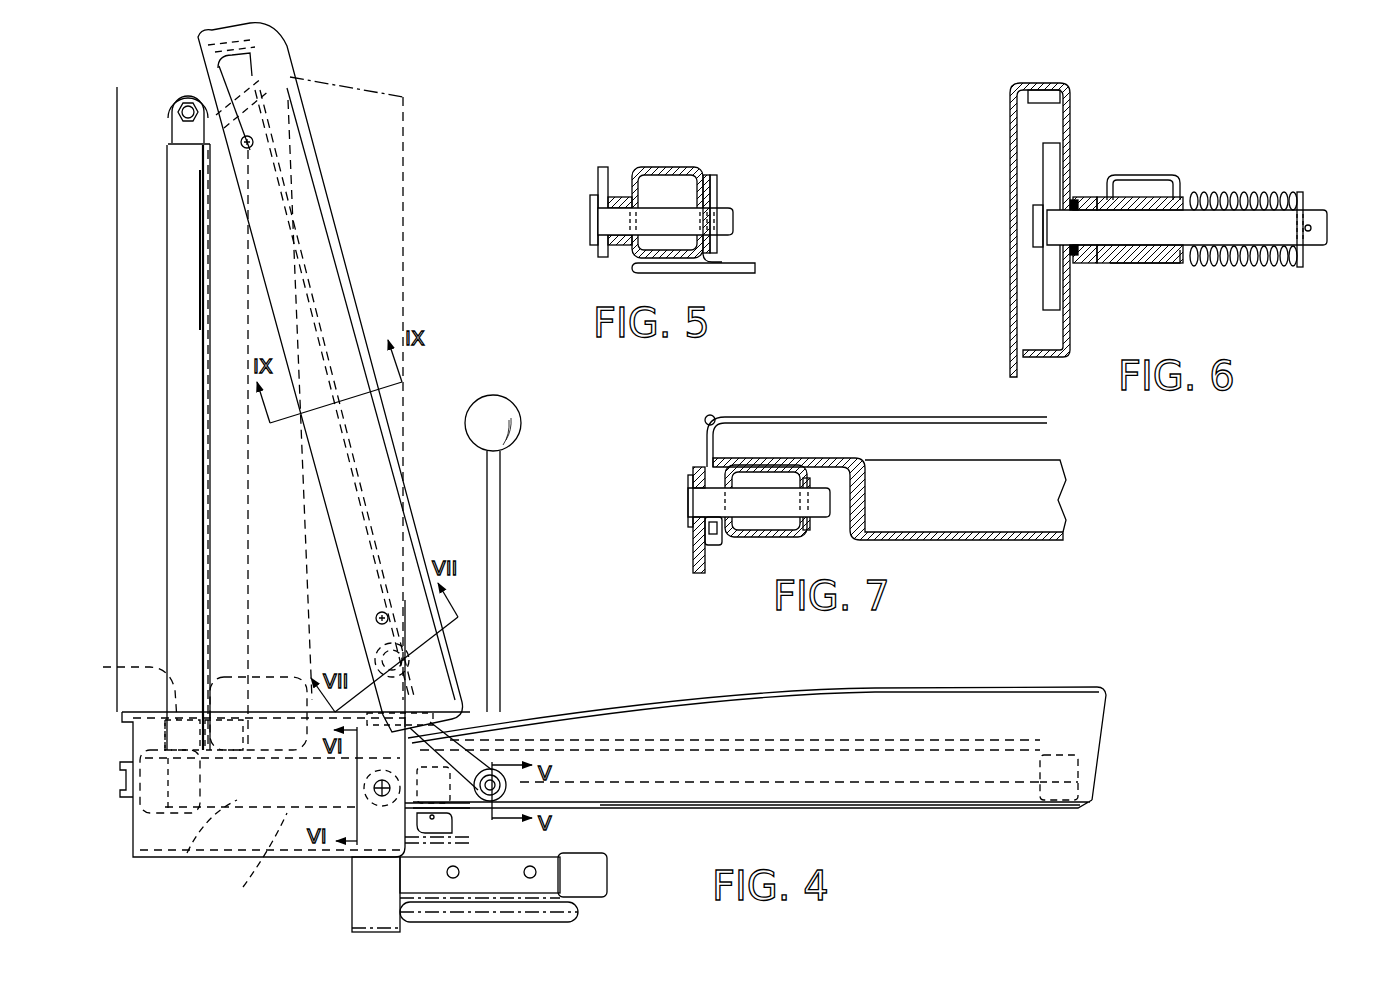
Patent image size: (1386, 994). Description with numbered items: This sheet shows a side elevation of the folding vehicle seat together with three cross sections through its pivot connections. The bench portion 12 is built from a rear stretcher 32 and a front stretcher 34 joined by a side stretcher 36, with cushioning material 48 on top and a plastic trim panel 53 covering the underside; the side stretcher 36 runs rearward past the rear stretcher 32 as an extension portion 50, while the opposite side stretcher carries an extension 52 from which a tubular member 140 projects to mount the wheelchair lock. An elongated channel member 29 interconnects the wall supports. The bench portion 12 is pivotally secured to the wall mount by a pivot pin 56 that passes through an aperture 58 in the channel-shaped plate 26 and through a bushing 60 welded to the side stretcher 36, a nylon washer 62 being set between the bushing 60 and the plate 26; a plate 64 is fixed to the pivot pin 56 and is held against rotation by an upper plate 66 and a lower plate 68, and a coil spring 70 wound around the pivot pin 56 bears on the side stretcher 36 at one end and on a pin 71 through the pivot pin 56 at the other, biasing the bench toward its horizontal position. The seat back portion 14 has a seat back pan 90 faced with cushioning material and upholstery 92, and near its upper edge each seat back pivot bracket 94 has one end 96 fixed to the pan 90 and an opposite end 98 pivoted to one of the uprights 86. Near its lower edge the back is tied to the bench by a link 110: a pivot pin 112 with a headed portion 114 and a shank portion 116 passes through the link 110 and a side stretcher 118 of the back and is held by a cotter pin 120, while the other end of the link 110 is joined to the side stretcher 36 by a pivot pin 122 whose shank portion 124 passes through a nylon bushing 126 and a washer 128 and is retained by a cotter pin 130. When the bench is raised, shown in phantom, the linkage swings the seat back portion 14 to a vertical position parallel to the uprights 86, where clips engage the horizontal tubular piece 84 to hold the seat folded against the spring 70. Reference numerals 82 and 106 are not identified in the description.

In FIG. 4, the bench portion 12 is at (628, 678).
In FIG. 4, the seat back portion 14 is at (376, 318).
In FIG. 4, the channel-shaped plate 26 is at (288, 820).
In FIG. 6, the channel-shaped plate 26 is at (1068, 148).
In FIG. 4, the channel member 29 is at (118, 757).
In FIG. 4, the rear stretcher 32 is at (492, 768).
In FIG. 4, the front stretcher 34 is at (1093, 780).
In FIG. 4, the side stretcher 36 is at (972, 792).
In FIG. 5, the side stretcher 36 is at (672, 167).
In FIG. 6, the side stretcher 36 is at (1135, 175).
In FIG. 4, the cushioning material 48 is at (973, 700).
In FIG. 4, the extension portion 50 is at (178, 858).
In FIG. 4, the extension 52 is at (352, 880).
In FIG. 4, the plastic trim panel 53 is at (875, 810).
In FIG. 4, the pivot pin 56 is at (362, 790).
In FIG. 6, the pivot pin 56 is at (1275, 218).
In FIG. 6, the aperture 58 is at (1077, 200).
In FIG. 6, the bushing 60 is at (1180, 200).
In FIG. 6, the nylon washer 62 is at (1083, 258).
In FIG. 6, the plate 64 is at (1050, 252).
In FIG. 6, the upper plate 66 is at (1043, 155).
In FIG. 6, the lower plate 68 is at (1043, 310).
In FIG. 6, the coil spring 70 is at (1232, 262).
In FIG. 6, the pin 71 is at (1312, 228).
In FIG. 4, the support column 82 is at (152, 390).
In FIG. 4, the horizontal tubular piece 84 is at (125, 667).
In FIG. 4, the uprights 86 is at (185, 483).
In FIG. 7, the seat back pan 90 is at (820, 460).
In FIG. 4, the cushioning material and upholstery 92 is at (330, 186).
In FIG. 4, the seat back pivot bracket 94 is at (217, 97).
In FIG. 4, the bracket end 96 is at (250, 78).
In FIG. 4, the bracket end 98 is at (173, 105).
In FIG. 4, the hinge nut 106 is at (200, 122).
In FIG. 4, the link 110 is at (460, 717).
In FIG. 5, the link 110 is at (598, 180).
In FIG. 7, the link 110 is at (695, 548).
In FIG. 7, the pivot pin 112 is at (683, 487).
In FIG. 7, the headed portion 114 is at (690, 475).
In FIG. 7, the shank portion 116 is at (770, 498).
In FIG. 7, the side stretcher 118 is at (745, 538).
In FIG. 7, the cotter pin 120 is at (810, 530).
In FIG. 5, the pivot pin 122 is at (596, 220).
In FIG. 5, the shank portion 124 is at (672, 218).
In FIG. 5, the nylon bushing 126 is at (620, 197).
In FIG. 5, the washer 128 is at (718, 265).
In FIG. 5, the cotter pin 130 is at (717, 192).
In FIG. 4, the tubular member 140 is at (600, 873).